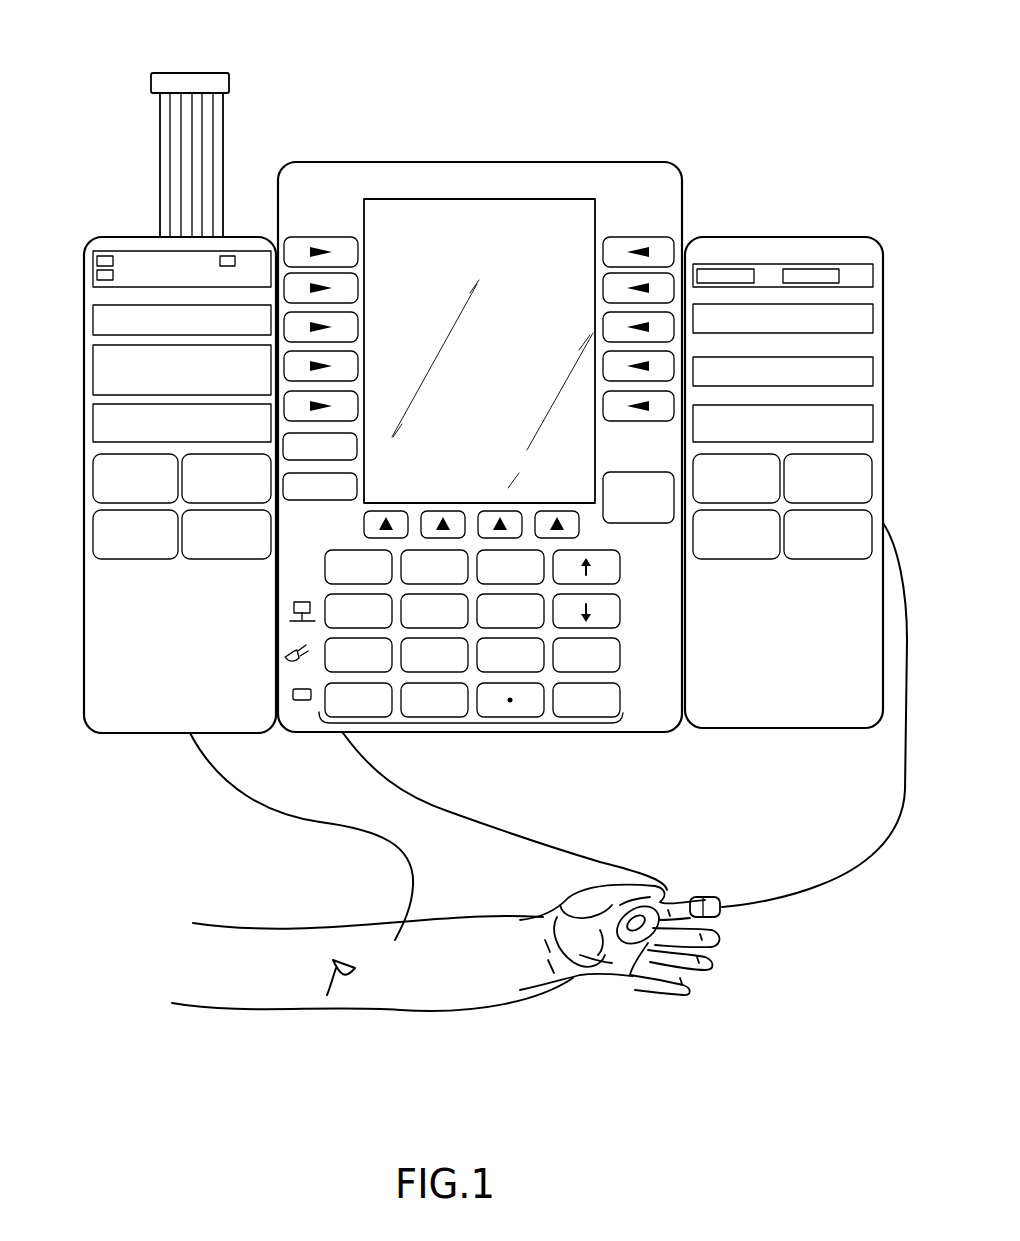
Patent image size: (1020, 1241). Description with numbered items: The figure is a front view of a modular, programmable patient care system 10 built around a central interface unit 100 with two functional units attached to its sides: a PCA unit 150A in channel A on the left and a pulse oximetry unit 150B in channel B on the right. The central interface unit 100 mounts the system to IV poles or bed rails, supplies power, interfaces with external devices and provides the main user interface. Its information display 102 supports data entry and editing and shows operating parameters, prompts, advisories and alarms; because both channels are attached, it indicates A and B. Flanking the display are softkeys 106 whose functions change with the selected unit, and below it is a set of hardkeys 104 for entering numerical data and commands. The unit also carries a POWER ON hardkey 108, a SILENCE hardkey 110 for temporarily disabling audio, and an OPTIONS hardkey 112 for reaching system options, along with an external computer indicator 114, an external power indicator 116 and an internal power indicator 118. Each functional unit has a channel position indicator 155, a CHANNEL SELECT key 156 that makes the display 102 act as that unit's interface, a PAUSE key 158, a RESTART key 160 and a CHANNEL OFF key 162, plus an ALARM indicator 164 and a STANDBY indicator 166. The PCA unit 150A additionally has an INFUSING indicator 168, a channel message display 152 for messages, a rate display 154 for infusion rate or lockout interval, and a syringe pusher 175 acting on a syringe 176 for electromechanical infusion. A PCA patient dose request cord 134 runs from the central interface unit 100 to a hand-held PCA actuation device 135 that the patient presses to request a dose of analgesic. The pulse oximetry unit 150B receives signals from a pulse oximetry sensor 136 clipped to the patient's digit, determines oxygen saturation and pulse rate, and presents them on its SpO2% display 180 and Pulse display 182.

The patient care system 10 is at (772, 122).
The central interface unit 100 is at (406, 148).
The information display 102 is at (528, 198).
The hardkeys 104 is at (472, 732).
The softkeys 106 is at (358, 252).
The POWER ON hardkey 108 is at (637, 524).
The SILENCE hardkey 110 is at (357, 445).
The OPTIONS hardkey 112 is at (357, 487).
The external computer indicator 114 is at (284, 608).
The external power indicator 116 is at (284, 656).
The internal power indicator 118 is at (284, 696).
The PCA patient dose request cord 134 is at (614, 858).
The PCA actuation device 135 is at (628, 975).
The pulse oximetry sensor 136 is at (738, 928).
The PCA unit 150A is at (88, 210).
The pulse oximetry unit 150B is at (885, 224).
The channel message display 152 is at (105, 362).
The rate display 154 is at (105, 318).
The channel position indicator 155 is at (105, 408).
The CHANNEL SELECT key 156 is at (707, 463).
The PAUSE key 158 is at (97, 516).
The RESTART key 160 is at (240, 559).
The CHANNEL OFF key 162 is at (271, 485).
The ALARM indicator 164 is at (98, 258).
The STANDBY indicator 166 is at (228, 255).
The INFUSING indicator 168 is at (100, 264).
The syringe pusher 175 is at (158, 82).
The syringe 176 is at (193, 123).
The SpO2% display 180 is at (862, 318).
The Pulse display 182 is at (862, 372).